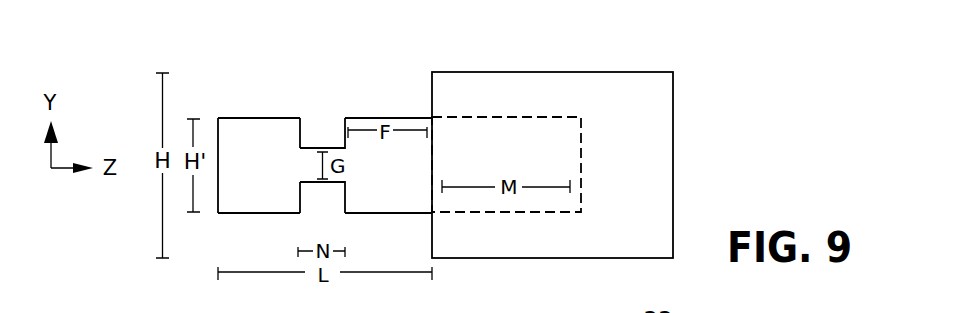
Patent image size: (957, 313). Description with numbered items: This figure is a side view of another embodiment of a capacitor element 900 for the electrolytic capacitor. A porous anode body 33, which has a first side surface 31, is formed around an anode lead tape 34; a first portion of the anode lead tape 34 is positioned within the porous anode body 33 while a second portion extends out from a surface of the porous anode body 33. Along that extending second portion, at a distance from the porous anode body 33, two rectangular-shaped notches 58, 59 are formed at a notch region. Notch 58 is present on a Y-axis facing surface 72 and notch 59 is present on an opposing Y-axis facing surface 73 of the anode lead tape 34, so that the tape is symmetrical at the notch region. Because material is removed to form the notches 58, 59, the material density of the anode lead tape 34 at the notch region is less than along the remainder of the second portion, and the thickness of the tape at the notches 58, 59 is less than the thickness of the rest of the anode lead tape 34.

The anode lead tape 34 is at (252, 117).
The Y-axis facing surface 72 is at (282, 117).
The opposing Y-axis facing surface 73 is at (277, 214).
The rectangular-shaped notch 58 is at (320, 125).
The rectangular-shaped notch 59 is at (325, 203).
The porous anode body 33 is at (638, 83).
The first side surface 31 is at (640, 170).
The capacitor element 900 is at (712, 159).